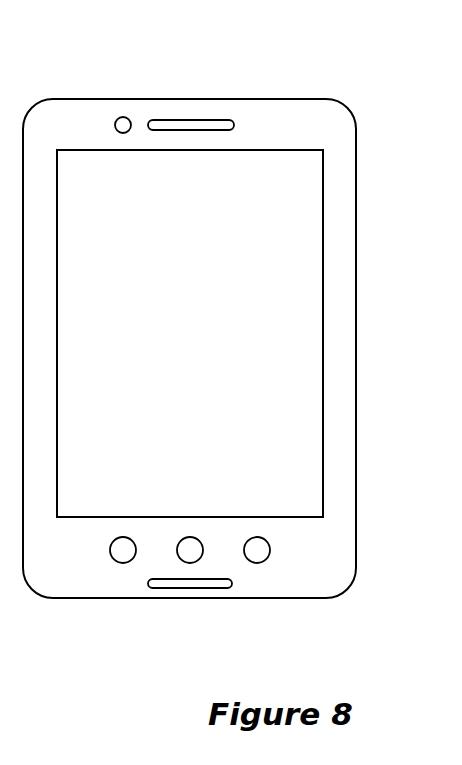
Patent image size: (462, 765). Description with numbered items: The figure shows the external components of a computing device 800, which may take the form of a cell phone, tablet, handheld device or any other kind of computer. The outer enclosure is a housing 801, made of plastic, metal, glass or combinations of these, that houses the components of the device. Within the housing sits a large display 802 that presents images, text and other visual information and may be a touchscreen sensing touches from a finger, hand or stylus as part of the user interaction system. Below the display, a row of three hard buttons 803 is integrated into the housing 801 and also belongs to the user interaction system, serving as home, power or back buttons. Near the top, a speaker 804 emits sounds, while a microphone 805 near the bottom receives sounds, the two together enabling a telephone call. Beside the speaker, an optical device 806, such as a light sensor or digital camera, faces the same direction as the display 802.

The computing device 800 is at (257, 66).
The housing 801 is at (356, 285).
The display 802 is at (323, 355).
The hard buttons 803 is at (122, 563).
The speaker 804 is at (202, 120).
The microphone 805 is at (217, 589).
The optical device 806 is at (124, 117).